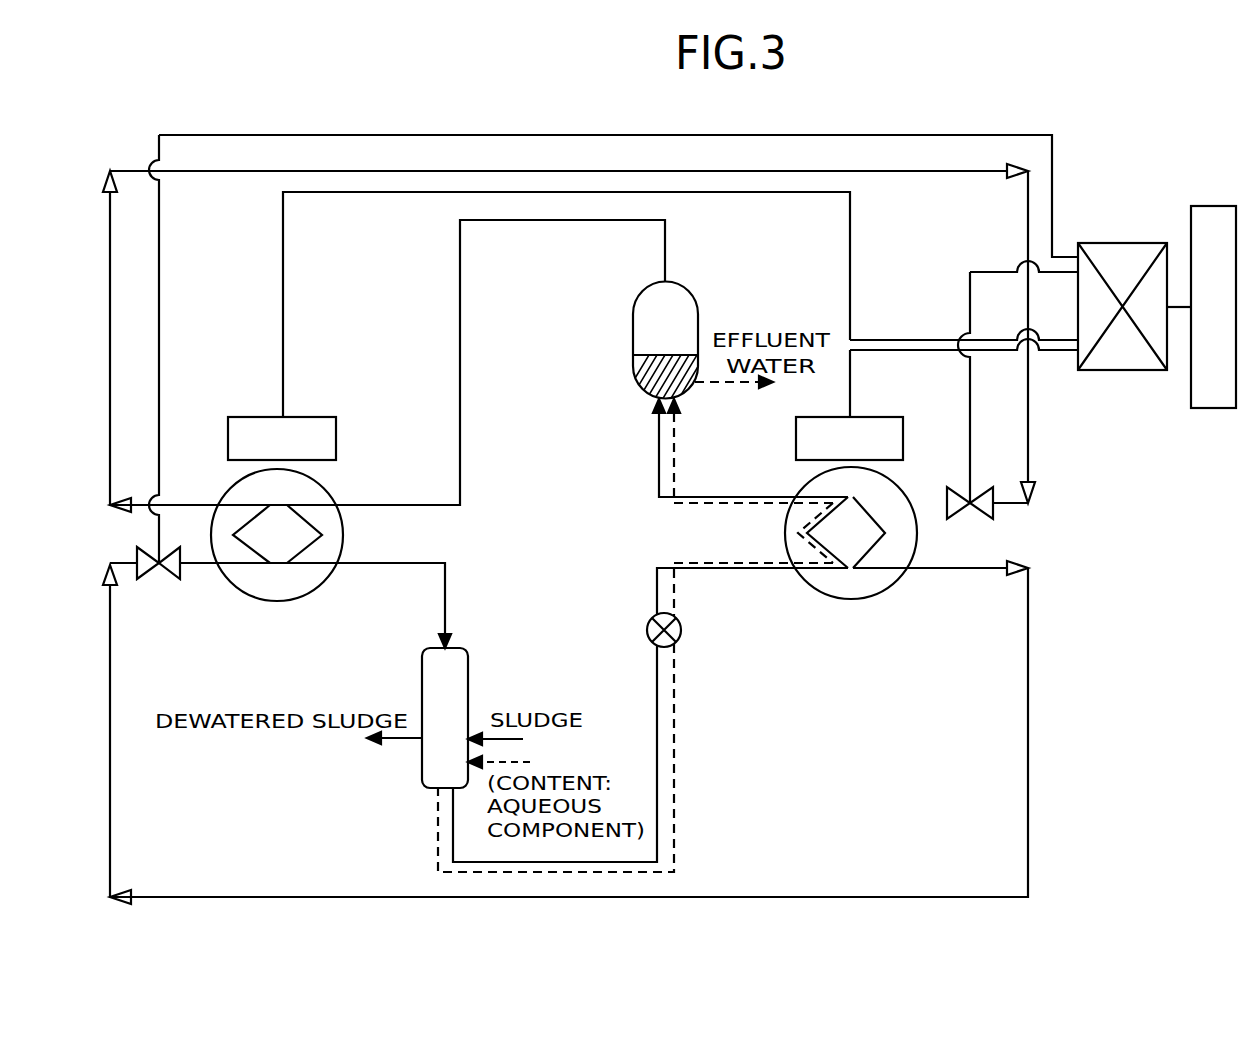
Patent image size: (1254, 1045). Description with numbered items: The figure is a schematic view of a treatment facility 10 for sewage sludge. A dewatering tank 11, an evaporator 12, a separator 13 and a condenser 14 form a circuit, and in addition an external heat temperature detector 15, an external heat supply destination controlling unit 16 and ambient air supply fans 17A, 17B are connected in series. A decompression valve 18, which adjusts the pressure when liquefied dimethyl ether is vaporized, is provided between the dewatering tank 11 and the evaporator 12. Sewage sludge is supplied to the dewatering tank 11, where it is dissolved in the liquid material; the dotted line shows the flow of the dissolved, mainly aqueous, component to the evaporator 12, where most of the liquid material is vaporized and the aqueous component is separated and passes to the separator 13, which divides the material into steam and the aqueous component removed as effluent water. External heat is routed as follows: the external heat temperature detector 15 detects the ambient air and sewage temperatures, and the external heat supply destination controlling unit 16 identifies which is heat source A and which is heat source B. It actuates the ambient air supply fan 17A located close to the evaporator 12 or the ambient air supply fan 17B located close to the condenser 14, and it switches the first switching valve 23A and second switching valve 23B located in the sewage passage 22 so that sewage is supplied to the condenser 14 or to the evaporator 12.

The treatment facility 10 is at (1150, 677).
The dewatering tank 11 is at (468, 656).
The evaporator 12 is at (848, 599).
The separator 13 is at (698, 316).
The condenser 14 is at (228, 490).
The external heat temperature detector 15 is at (1213, 408).
The external heat supply destination controlling unit 16 is at (1110, 370).
The ambient air supply fan 17A is at (886, 417).
The ambient air supply fan 17B is at (325, 417).
The decompression valve 18 is at (681, 631).
The sewage passage 22 is at (935, 171).
The first switching valve 23A is at (955, 518).
The second switching valve 23B is at (150, 578).